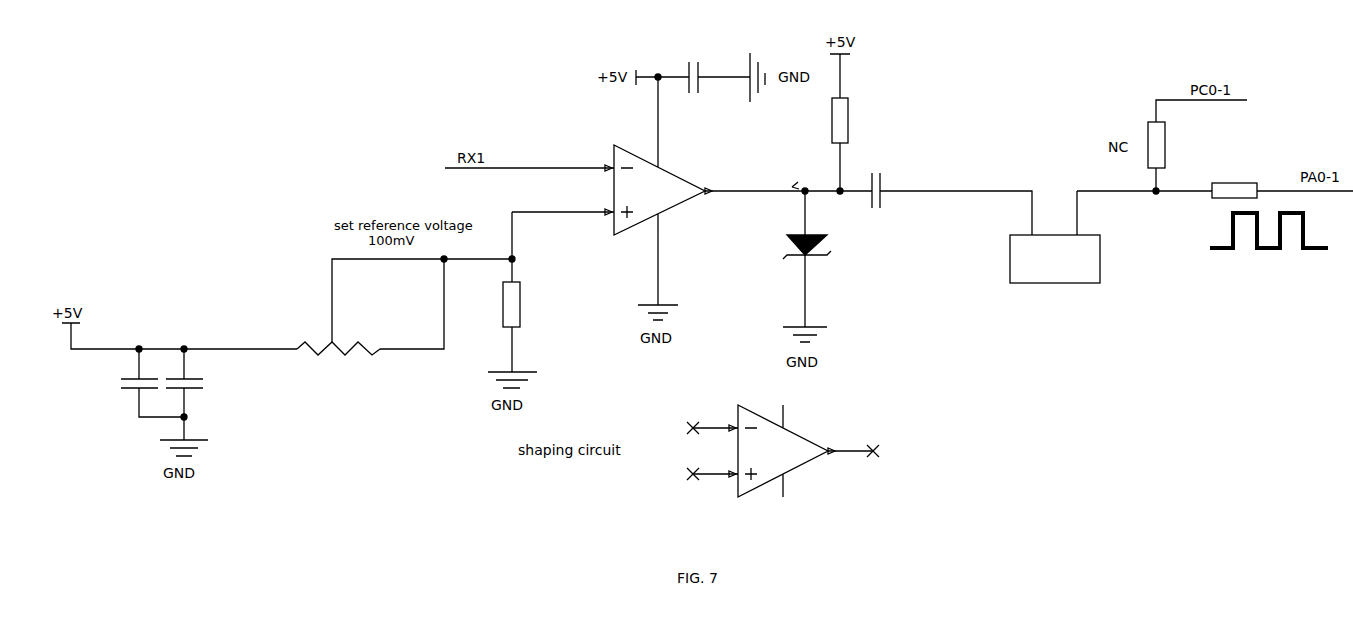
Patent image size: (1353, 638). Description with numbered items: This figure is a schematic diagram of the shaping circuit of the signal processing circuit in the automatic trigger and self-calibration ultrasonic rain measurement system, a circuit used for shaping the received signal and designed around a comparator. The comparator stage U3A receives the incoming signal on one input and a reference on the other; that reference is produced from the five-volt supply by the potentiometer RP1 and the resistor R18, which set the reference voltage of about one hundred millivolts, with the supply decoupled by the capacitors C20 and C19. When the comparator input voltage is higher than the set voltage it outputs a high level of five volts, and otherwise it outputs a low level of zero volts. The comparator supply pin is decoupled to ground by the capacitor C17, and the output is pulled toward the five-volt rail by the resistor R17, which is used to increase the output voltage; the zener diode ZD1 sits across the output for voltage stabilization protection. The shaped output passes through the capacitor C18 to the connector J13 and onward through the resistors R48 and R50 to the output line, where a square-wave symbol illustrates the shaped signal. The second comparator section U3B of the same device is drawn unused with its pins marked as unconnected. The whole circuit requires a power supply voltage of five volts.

The capacitor 0.1uF C20 is at (129, 417).
The capacitor 10nF C19 is at (207, 417).
The potentiometer 20K RP1 is at (335, 337).
The resistor 200 ohm R18 is at (547, 292).
The comparator LM393 U3A is at (658, 191).
The capacitor 0.1uF C17 is at (701, 78).
The resistor R17 is at (879, 122).
The capacitor 10nF C18 is at (946, 192).
The zener diode ZD1 is at (847, 254).
The connector CON2 J13 is at (1109, 257).
The resistor R48 is at (1197, 145).
The resistor 0 ohm R50 is at (1282, 189).
The comparator LM393 U3B is at (783, 452).